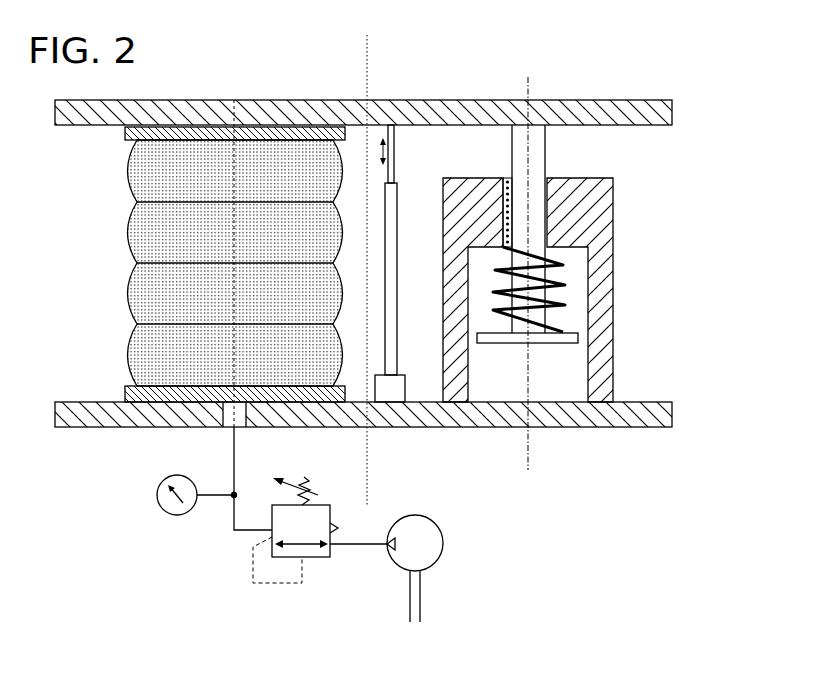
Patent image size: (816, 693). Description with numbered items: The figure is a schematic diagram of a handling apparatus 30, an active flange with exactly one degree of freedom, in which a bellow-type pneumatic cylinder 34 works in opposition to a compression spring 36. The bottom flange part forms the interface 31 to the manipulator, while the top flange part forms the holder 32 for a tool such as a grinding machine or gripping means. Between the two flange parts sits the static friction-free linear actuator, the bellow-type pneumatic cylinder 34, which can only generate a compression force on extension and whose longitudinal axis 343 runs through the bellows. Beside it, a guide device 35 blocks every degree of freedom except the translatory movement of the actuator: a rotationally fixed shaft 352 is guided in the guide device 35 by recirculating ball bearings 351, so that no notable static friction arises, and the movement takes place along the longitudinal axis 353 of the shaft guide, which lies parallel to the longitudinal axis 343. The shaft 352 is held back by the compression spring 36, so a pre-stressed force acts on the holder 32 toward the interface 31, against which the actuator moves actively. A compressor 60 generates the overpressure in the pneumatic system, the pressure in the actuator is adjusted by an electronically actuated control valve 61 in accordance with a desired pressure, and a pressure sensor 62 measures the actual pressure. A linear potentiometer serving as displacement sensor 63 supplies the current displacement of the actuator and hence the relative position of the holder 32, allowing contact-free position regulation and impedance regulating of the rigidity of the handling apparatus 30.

The handling apparatus 30 is at (625, 66).
The interface to the manipulator 31 is at (595, 427).
The holder for a tool 32 is at (482, 100).
The bellow-type pneumatic cylinder 34 is at (125, 235).
The guide device 35 is at (613, 217).
The compression spring 36 is at (500, 312).
The longitudinal axis of the linear actuator 343 is at (234, 100).
The recirculating ball bearings 351 is at (506, 178).
The shaft 352 is at (548, 157).
The longitudinal axis of the shaft guide 353 is at (528, 450).
The compressor 60 is at (445, 548).
The control valve 61 is at (330, 510).
The pressure sensor 62 is at (175, 513).
The displacement sensor 63 is at (392, 380).